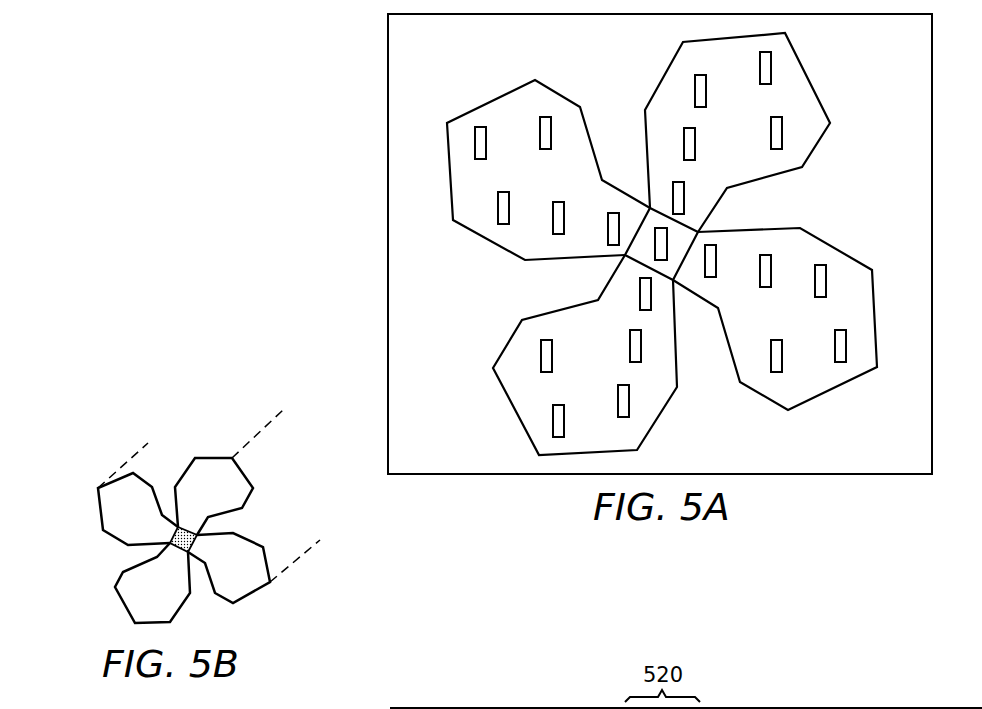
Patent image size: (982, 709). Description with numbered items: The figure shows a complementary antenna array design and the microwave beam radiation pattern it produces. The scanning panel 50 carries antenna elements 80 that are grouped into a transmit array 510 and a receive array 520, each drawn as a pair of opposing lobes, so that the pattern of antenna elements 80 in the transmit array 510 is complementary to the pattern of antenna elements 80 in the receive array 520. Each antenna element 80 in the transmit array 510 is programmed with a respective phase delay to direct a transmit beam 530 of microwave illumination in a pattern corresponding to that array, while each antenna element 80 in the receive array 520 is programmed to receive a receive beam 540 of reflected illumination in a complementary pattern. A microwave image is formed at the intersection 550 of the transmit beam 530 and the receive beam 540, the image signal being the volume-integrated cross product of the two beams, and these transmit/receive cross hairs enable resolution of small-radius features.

In FIG. 5A, the scanning panel 50 is at (386, 175).
In FIG. 5A, the transmit array 510 is at (490, 100).
In FIG. 5A, the receive array 520 is at (667, 72).
In FIG. 5A, the antenna element 80 is at (770, 133).
In FIG. 5B, the transmit beam 530 is at (253, 600).
In FIG. 5B, the receive beam 540 is at (212, 455).
In FIG. 5B, the intersection 550 is at (167, 531).